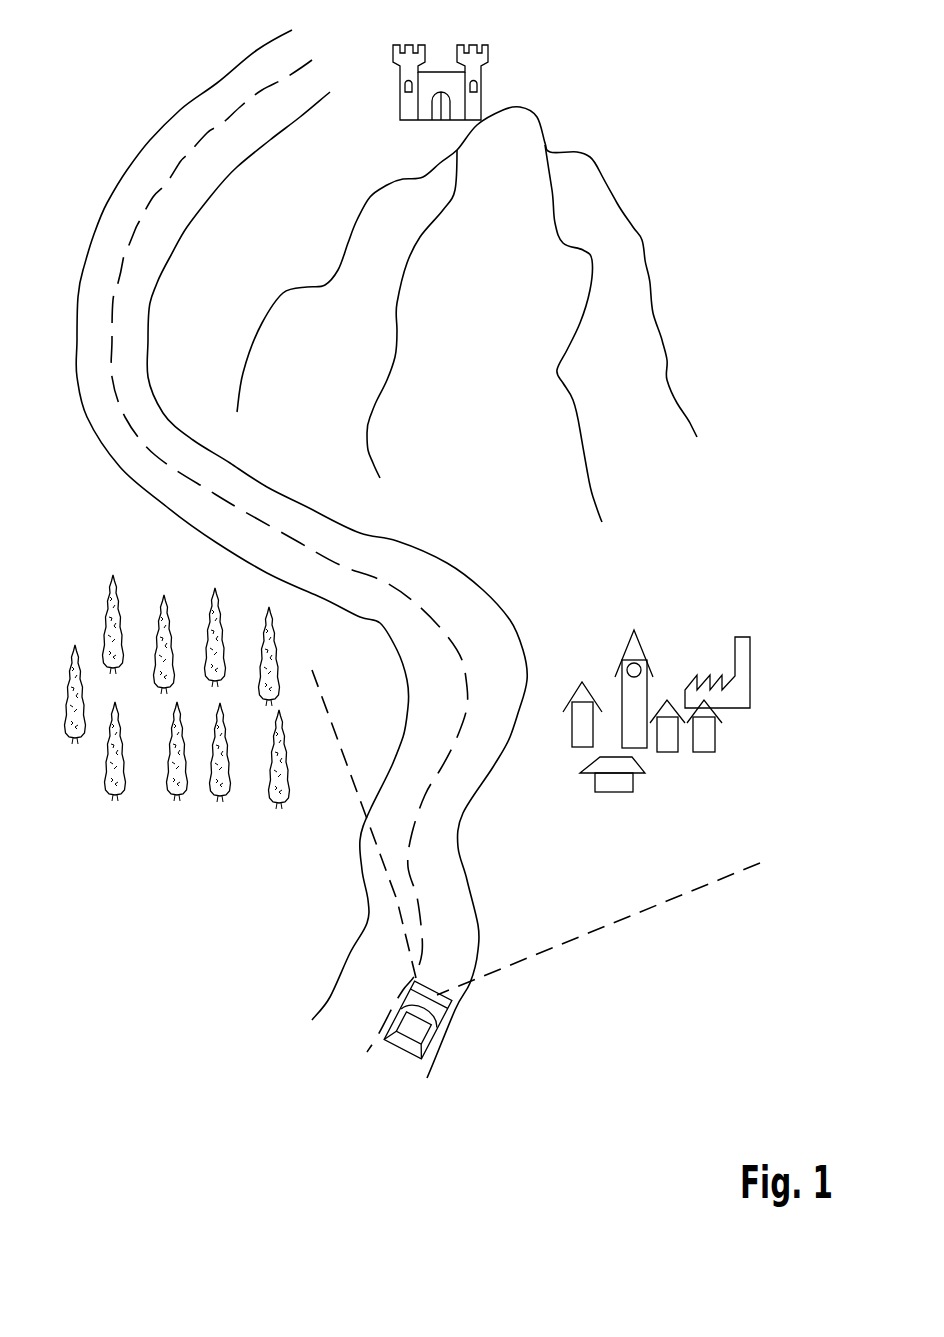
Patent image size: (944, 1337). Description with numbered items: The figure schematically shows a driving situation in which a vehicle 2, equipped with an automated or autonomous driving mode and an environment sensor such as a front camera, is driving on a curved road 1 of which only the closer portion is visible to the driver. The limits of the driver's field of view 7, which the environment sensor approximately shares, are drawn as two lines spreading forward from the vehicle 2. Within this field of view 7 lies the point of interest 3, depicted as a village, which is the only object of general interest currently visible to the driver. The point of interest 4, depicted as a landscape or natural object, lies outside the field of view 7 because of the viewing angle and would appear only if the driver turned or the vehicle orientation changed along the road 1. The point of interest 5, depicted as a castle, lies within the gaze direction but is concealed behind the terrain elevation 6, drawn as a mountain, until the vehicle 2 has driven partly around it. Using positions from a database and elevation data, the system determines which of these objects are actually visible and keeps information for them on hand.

The road 1 is at (178, 112).
The vehicle 2 is at (430, 1037).
The point of interest 3 is at (688, 777).
The point of interest 4 is at (264, 837).
The point of interest 5 is at (530, 75).
The terrain elevation 6 is at (652, 204).
The field of view 7 is at (334, 735).